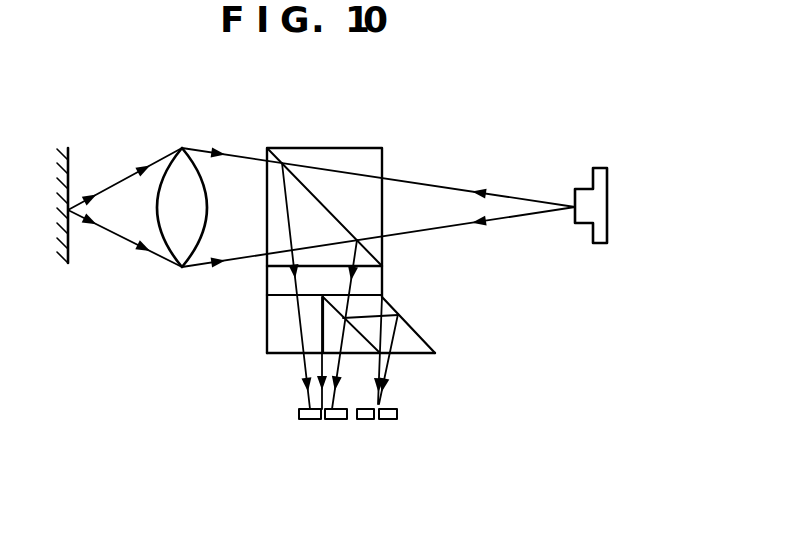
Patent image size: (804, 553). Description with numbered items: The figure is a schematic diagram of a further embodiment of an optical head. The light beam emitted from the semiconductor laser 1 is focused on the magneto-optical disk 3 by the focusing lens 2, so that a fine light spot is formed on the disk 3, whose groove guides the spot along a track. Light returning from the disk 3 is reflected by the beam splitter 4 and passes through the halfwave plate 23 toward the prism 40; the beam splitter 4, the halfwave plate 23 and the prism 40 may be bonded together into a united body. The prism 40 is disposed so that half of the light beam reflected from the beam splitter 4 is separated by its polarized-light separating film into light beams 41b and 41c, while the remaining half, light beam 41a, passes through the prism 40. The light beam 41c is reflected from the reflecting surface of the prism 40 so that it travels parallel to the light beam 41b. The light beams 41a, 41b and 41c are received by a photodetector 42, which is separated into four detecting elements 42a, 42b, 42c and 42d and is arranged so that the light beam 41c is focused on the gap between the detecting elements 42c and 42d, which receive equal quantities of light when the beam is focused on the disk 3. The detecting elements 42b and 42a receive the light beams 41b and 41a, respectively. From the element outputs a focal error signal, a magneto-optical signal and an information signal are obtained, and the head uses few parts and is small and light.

The semiconductor laser 1 is at (603, 168).
The focusing lens 2 is at (182, 148).
The magneto-optical disk 3 is at (68, 170).
The beam splitter 4 is at (367, 148).
The halfwave plate 23 is at (383, 277).
The prism 40 is at (407, 343).
The light beam 41a is at (310, 393).
The light beam 41b is at (337, 392).
The light beam 41c is at (380, 392).
The photodetector 42 is at (368, 442).
The detecting element 42a is at (298, 419).
The detecting element 42b is at (335, 420).
The detecting element 42c is at (365, 420).
The detecting element 42d is at (397, 420).